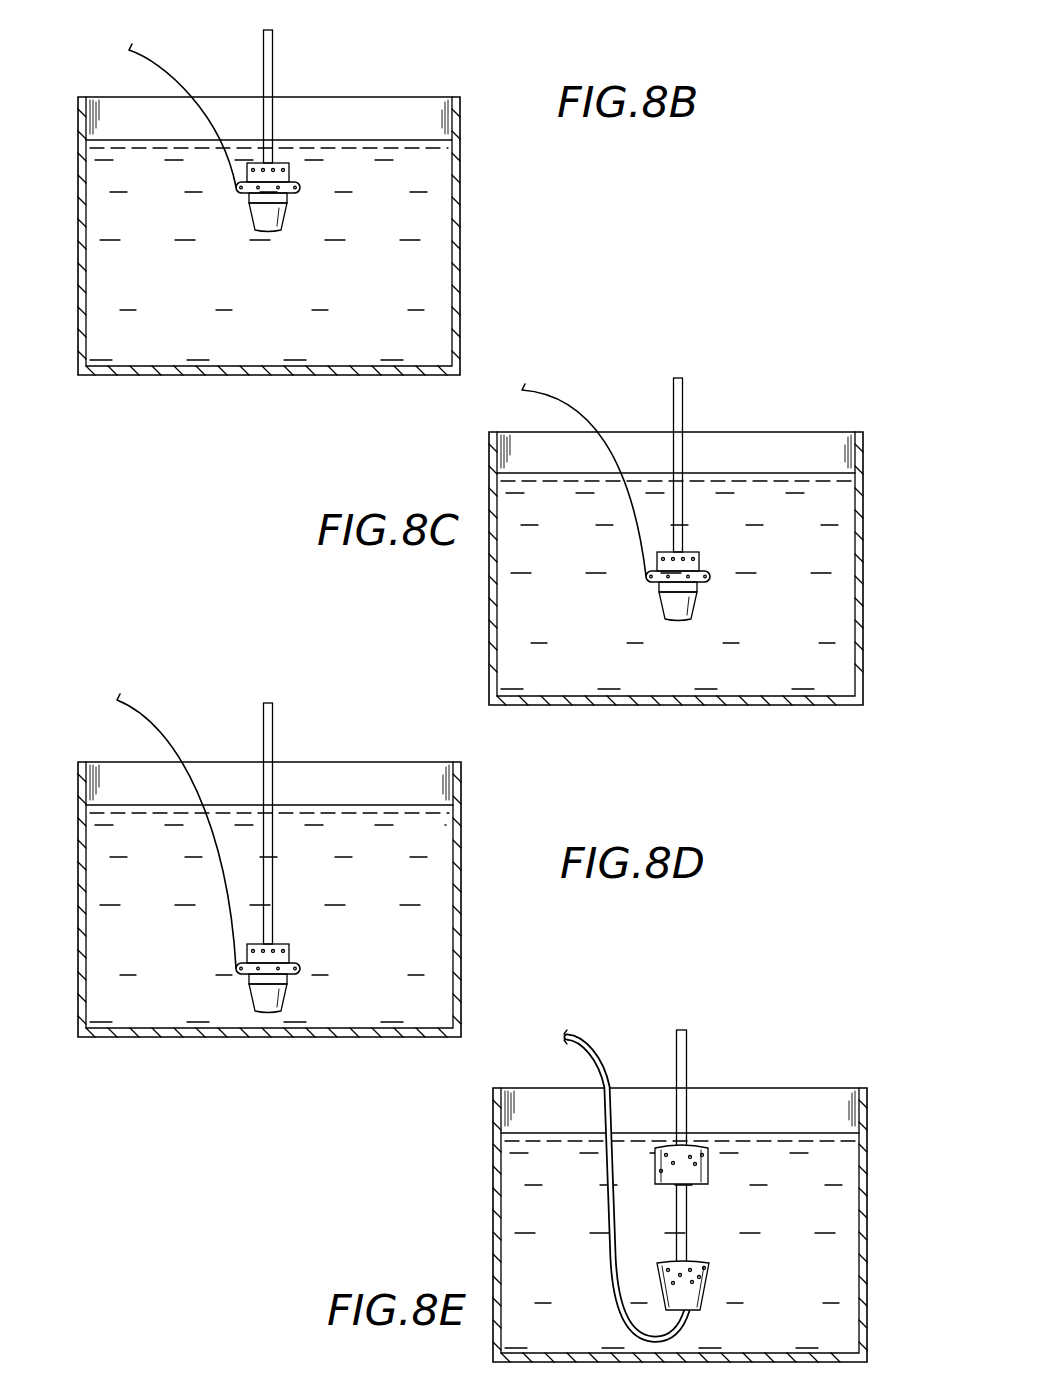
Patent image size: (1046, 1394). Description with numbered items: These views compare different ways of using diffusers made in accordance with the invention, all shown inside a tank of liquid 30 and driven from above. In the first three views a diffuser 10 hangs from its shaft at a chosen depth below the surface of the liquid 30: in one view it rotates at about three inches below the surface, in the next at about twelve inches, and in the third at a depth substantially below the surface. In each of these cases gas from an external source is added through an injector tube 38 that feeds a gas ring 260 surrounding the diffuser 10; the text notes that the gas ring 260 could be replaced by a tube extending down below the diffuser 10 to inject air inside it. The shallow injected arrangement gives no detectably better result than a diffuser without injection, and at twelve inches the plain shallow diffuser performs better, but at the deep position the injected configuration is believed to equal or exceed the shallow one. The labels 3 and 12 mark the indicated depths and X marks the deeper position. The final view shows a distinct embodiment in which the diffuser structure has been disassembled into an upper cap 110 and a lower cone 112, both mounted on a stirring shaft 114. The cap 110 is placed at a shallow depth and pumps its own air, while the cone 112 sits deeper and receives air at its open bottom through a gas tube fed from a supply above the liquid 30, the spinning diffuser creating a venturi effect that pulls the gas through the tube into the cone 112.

In FIG. 8B, the liquid surface 3 is at (78, 155).
In FIG. 8C, the liquid surface 3 is at (490, 487).
In FIG. 8D, the liquid surface 3 is at (78, 817).
In FIG. 8B, the diffuser 10 is at (288, 217).
In FIG. 8C, the diffuser 10 is at (698, 605).
In FIG. 8D, the diffuser 10 is at (290, 997).
In FIG. 8B, the liquid 12 is at (78, 247).
In FIG. 8C, the liquid 12 is at (490, 577).
In FIG. 8D, the liquid 12 is at (78, 907).
In FIG. 8B, the liquid 30 is at (423, 227).
In FIG. 8C, the liquid 30 is at (722, 668).
In FIG. 8D, the liquid 30 is at (435, 845).
In FIG. 8E, the liquid 30 is at (680, 1225).
In FIG. 8B, the injector tube 38 is at (162, 63).
In FIG. 8C, the injector tube 38 is at (557, 410).
In FIG. 8D, the injector tube 38 is at (146, 715).
In FIG. 8B, the gas ring 260 is at (302, 185).
In FIG. 8C, the gas ring 260 is at (712, 577).
In FIG. 8D, the gas ring 260 is at (303, 963).
In FIG. 8B, the submersion depth X is at (78, 335).
In FIG. 8C, the submersion depth X is at (490, 663).
In FIG. 8D, the submersion depth X is at (78, 992).
In FIG. 8E, the upper cap 110 is at (710, 1167).
In FIG. 8E, the lower cone 112 is at (705, 1290).
In FIG. 8E, the stirring shaft 114 is at (688, 1055).